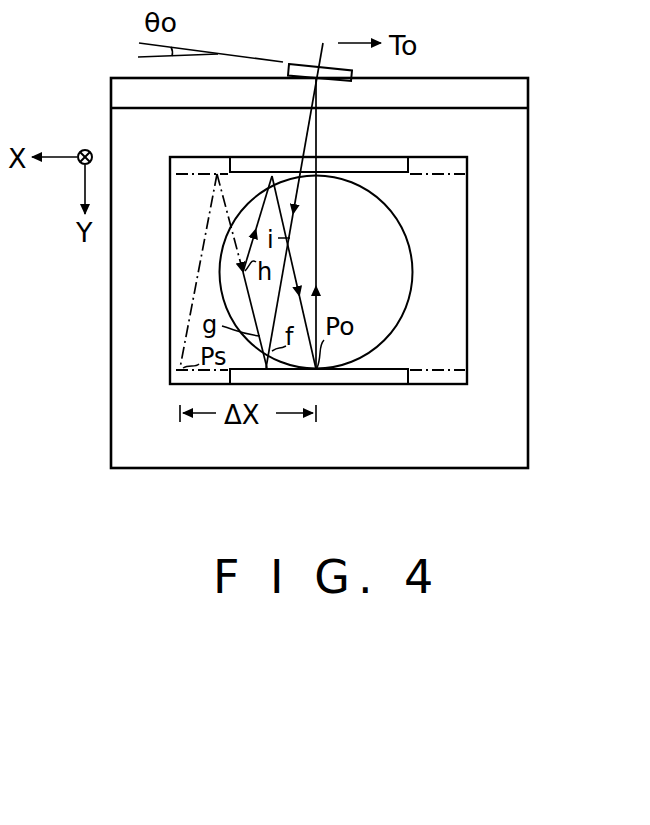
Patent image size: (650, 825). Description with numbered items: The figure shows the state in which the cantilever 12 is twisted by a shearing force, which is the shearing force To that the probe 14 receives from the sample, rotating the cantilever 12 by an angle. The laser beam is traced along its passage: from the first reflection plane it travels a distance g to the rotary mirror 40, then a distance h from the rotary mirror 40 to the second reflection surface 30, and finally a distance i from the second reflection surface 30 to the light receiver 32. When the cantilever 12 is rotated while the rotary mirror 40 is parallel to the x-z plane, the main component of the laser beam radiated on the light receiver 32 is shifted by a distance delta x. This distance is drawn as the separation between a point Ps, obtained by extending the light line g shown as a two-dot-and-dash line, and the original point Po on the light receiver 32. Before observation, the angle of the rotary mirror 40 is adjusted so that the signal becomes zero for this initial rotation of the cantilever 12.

The cantilever 12 is at (291, 65).
The probe 14 is at (322, 42).
The second reflection surface 30 is at (396, 172).
The light receiver 32 is at (402, 368).
The rotary mirror 40 is at (402, 237).